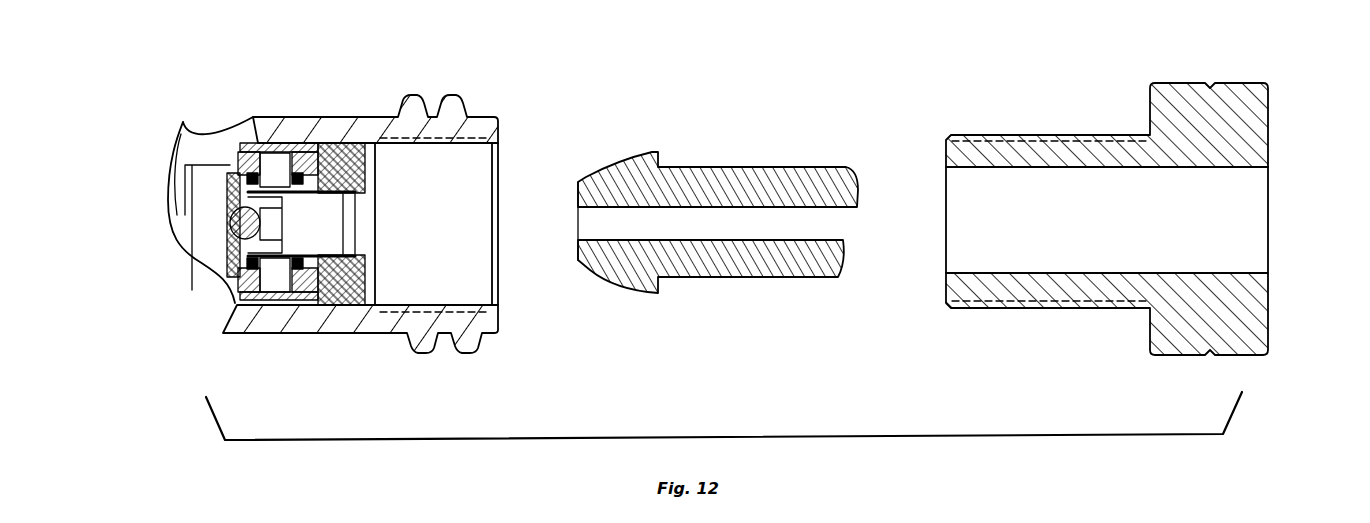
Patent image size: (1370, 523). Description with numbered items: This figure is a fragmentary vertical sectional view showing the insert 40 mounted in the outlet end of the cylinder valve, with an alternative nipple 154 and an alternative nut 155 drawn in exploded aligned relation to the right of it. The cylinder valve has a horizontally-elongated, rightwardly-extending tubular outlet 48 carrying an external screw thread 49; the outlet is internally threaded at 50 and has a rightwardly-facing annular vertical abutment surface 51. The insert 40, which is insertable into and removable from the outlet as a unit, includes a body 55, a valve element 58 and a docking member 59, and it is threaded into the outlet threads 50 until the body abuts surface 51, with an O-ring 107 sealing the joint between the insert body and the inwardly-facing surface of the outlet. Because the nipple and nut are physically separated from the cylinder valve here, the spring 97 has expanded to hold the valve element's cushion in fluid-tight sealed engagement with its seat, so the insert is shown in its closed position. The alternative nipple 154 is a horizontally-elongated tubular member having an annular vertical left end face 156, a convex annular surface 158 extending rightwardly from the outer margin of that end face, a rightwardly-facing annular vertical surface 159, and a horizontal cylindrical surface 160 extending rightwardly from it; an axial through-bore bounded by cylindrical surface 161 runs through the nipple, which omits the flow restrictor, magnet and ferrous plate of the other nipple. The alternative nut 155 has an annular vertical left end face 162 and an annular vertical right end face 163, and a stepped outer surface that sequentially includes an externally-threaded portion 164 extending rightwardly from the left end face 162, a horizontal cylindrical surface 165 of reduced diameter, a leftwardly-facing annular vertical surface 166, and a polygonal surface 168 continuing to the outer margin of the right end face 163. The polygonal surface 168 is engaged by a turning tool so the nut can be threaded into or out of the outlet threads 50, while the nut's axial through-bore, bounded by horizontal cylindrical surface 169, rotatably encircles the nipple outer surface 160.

The insert 40 is at (302, 117).
The tubular outlet 48 is at (386, 138).
The external screw thread 49 is at (448, 97).
The internally threaded portion 50 is at (432, 146).
The annular vertical abutment surface 51 is at (262, 147).
The body 55 is at (292, 306).
The valve element 58 is at (347, 229).
The docking member 59 is at (364, 186).
The spring 97 is at (271, 298).
The O-ring 107 is at (298, 136).
The alternative nipple 154 is at (748, 310).
The alternative nut 155 is at (1088, 344).
The left end face 156 is at (575, 258).
The convex annular surface 158 is at (613, 153).
The rightwardly-facing annular vertical surface 159 is at (661, 152).
The horizontal cylindrical surface 160 is at (742, 166).
The cylindrical surface 161 is at (811, 208).
The left end face 162 is at (942, 274).
The right end face 163 is at (1272, 125).
The externally-threaded portion 164 is at (1032, 133).
The horizontal cylindrical surface 165 is at (1127, 133).
The leftwardly-facing annular vertical surface 166 is at (1148, 98).
The polygonal surface 168 is at (1191, 80).
The horizontal cylindrical surface 169 is at (1168, 168).